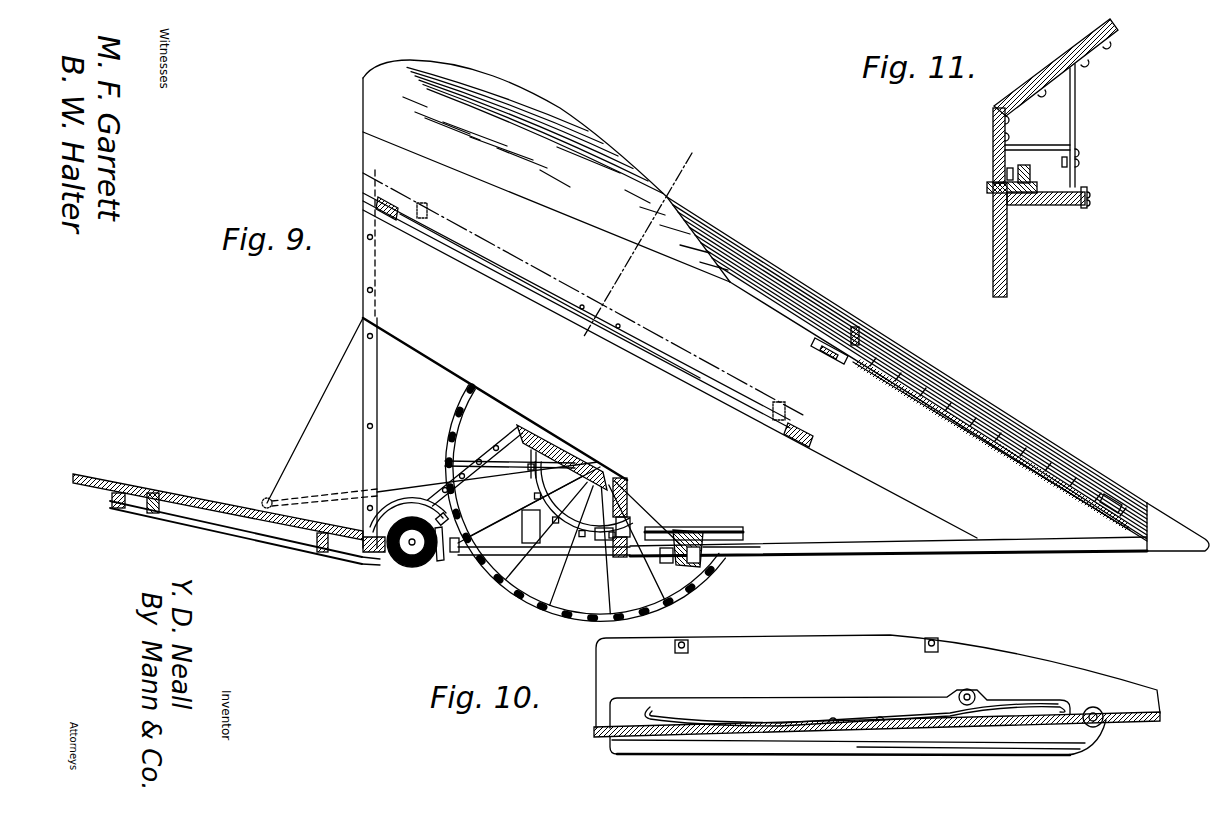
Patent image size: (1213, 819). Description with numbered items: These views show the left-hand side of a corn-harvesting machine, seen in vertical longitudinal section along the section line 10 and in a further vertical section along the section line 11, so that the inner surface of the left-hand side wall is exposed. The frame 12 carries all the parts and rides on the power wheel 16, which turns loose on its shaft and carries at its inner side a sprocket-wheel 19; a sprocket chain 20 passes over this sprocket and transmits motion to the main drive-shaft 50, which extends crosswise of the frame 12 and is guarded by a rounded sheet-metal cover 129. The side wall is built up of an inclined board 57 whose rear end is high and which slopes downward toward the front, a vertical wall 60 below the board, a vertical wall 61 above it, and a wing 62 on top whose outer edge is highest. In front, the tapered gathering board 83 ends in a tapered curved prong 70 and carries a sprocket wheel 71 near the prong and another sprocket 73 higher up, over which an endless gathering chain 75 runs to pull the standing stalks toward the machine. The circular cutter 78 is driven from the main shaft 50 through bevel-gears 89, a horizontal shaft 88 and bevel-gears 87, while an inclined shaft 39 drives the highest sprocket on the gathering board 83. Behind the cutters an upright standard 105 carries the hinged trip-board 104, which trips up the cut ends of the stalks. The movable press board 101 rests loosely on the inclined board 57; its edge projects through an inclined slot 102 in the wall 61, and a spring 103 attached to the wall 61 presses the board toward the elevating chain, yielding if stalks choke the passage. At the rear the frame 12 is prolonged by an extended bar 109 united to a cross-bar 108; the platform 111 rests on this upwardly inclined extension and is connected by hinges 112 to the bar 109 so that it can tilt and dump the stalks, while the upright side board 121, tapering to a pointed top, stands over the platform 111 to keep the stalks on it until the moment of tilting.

In FIG. 9, the chute frame line 10 is at (363, 173).
In FIG. 9, the section line 11 is at (639, 254).
In FIG. 9, the frame 12 is at (843, 547).
In FIG. 9, the power wheel 16 is at (513, 593).
In FIG. 9, the sprocket-wheel 19 is at (525, 503).
In FIG. 9, the sprocket chain 20 is at (487, 458).
In FIG. 9, the inclined shaft 39 is at (843, 364).
In FIG. 9, the main drive-shaft 50 is at (414, 546).
In FIG. 9, the inclined board 57 is at (494, 275).
In FIG. 10, the inclined board 57 is at (784, 644).
In FIG. 11, the inclined board 57 is at (1037, 200).
In FIG. 9, the vertical wall 60 is at (440, 355).
In FIG. 11, the vertical wall 60 is at (1007, 255).
In FIG. 9, the vertical wall 61 is at (755, 336).
In FIG. 10, the vertical wall 61 is at (1070, 735).
In FIG. 11, the vertical wall 61 is at (992, 126).
In FIG. 9, the wing 62 is at (566, 108).
In FIG. 11, the wing 62 is at (1067, 52).
In FIG. 9, the tapered curved prong 70 is at (1168, 522).
In FIG. 9, the sprocket wheel 71 is at (1110, 494).
In FIG. 9, the sprocket 73 is at (860, 352).
In FIG. 9, the endless gathering chain 75 is at (1008, 450).
In FIG. 9, the circular cutter 78 is at (715, 527).
In FIG. 9, the gathering board 83 is at (1008, 418).
In FIG. 9, the bevel-gears 87 is at (728, 561).
In FIG. 9, the horizontal shaft 88 is at (584, 553).
In FIG. 9, the bevel-gears 89 is at (403, 566).
In FIG. 9, the movable press board 101 is at (710, 374).
In FIG. 10, the movable press board 101 is at (803, 707).
In FIG. 11, the movable press board 101 is at (988, 187).
In FIG. 9, the inclined slot 102 is at (738, 400).
In FIG. 11, the inclined slot 102 is at (995, 174).
In FIG. 10, the spring 103 is at (727, 719).
In FIG. 11, the spring 103 is at (1032, 175).
In FIG. 9, the trip-board 104 is at (520, 424).
In FIG. 9, the upright standard 105 is at (630, 502).
In FIG. 9, the cross-bar 108 is at (110, 498).
In FIG. 9, the extended bar 109 is at (213, 521).
In FIG. 9, the platform 111 is at (157, 494).
In FIG. 9, the hinges 112 is at (156, 515).
In FIG. 9, the upright side board 121 is at (319, 413).
In FIG. 9, the sheet-metal cover 129 is at (403, 490).